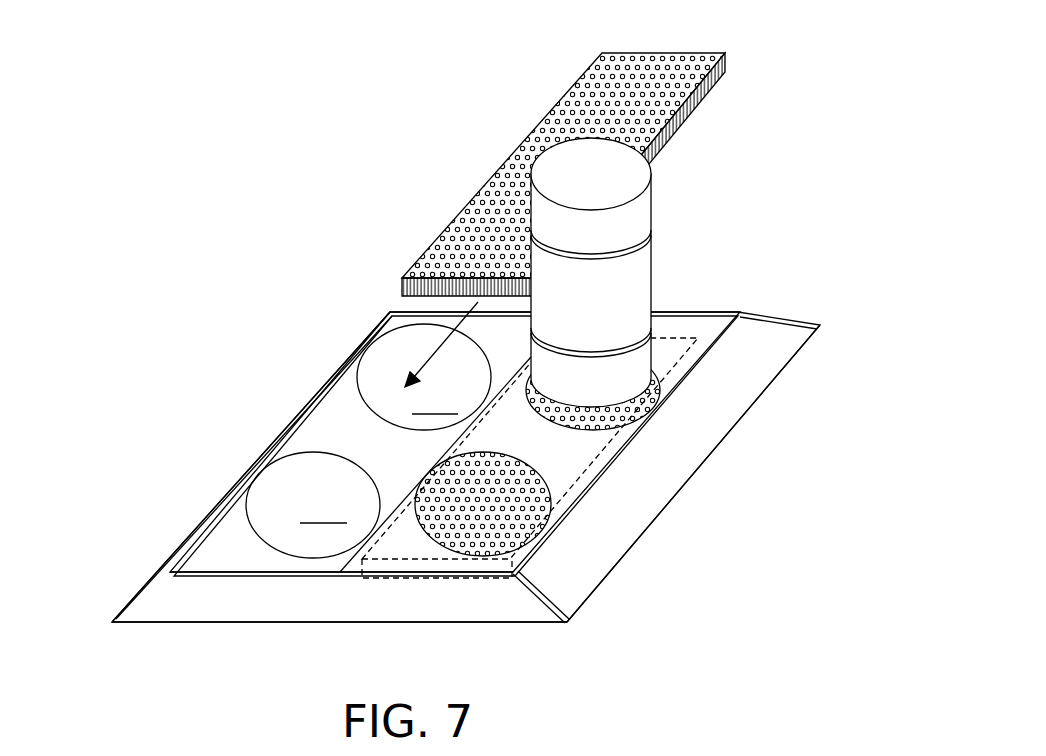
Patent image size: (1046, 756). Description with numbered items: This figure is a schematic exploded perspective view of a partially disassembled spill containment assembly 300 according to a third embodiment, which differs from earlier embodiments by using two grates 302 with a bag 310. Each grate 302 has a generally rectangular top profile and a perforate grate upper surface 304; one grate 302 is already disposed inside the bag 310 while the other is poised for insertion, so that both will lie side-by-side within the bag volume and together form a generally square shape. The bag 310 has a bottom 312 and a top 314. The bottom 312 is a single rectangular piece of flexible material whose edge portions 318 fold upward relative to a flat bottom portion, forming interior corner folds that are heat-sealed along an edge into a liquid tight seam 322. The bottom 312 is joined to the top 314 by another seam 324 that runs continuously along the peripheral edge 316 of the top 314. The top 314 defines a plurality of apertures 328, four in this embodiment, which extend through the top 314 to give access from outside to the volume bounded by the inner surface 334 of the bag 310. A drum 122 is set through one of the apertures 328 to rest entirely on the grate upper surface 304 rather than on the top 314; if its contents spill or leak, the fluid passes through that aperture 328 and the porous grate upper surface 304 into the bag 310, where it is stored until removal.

The drum 122 is at (652, 214).
The spill containment assembly 300 is at (306, 243).
The grate 302 is at (727, 62).
The grate upper surface 304 is at (677, 62).
The bag 310 is at (212, 518).
The bottom 312 is at (193, 602).
The top 314 is at (238, 571).
The peripheral edge 316 is at (202, 557).
The edge portions 318 is at (260, 600).
The seam 322 is at (790, 318).
The seam 324 is at (250, 472).
The apertures 328 is at (647, 360).
The inner surface 334 is at (368, 430).